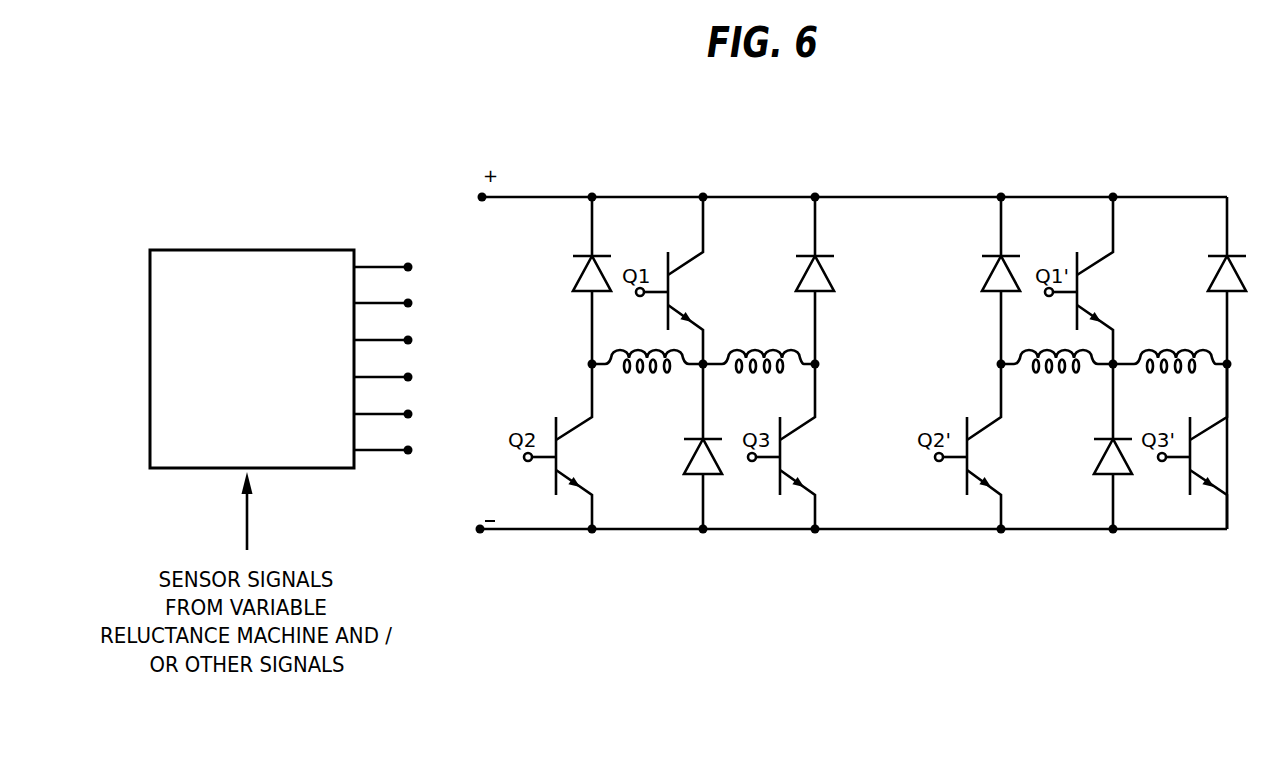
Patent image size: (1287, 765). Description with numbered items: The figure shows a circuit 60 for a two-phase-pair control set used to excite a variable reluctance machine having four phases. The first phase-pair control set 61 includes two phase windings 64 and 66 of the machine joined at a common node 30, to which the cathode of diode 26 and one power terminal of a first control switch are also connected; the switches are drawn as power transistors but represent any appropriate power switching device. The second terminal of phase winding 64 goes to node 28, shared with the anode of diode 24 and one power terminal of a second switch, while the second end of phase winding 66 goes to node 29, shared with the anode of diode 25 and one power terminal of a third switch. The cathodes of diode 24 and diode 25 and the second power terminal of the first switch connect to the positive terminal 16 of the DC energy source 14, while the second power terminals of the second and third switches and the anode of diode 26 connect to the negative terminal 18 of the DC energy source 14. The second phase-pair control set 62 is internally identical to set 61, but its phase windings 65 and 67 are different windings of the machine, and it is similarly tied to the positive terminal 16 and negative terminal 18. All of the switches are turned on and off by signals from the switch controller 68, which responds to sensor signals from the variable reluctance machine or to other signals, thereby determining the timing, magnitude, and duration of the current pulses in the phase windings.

The DC energy source 14 is at (468, 228).
The positive terminal 16 is at (486, 195).
The negative terminal 18 is at (480, 534).
The diode 24 is at (583, 272).
The diode 25 is at (805, 272).
The diode 26 is at (690, 461).
The node 28 is at (598, 360).
The node 29 is at (818, 360).
The common node 30 is at (706, 360).
The circuit 60 is at (882, 168).
The phase-pair control set 61 is at (680, 383).
The phase-pair control set 62 is at (1091, 383).
The phase winding 64 is at (652, 373).
The phase winding 65 is at (1070, 371).
The phase winding 66 is at (760, 355).
The phase winding 67 is at (1170, 355).
The switch controller 68 is at (242, 403).